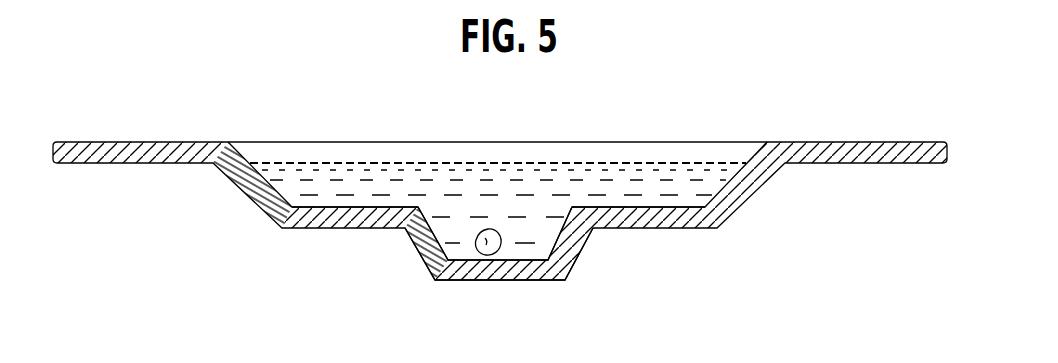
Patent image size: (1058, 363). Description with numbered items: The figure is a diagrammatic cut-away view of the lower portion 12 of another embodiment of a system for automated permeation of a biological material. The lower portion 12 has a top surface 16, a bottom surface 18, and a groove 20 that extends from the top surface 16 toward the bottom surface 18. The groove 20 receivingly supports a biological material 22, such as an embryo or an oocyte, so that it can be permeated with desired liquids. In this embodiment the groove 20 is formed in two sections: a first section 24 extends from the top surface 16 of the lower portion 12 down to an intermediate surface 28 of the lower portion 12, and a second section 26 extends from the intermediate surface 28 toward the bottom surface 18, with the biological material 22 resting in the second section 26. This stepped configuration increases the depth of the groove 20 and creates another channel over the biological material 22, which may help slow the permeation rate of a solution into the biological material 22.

The lower portion 12 is at (805, 164).
The top surface 16 is at (840, 141).
The bottom surface 18 is at (545, 282).
The groove 20 is at (412, 233).
The biological material 22 is at (495, 256).
The first section 24 is at (674, 192).
The second section 26 is at (444, 264).
The intermediate surface 28 is at (630, 207).